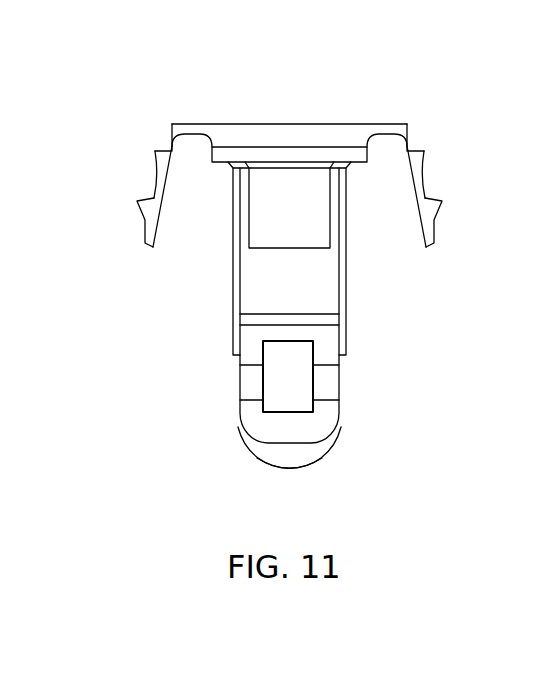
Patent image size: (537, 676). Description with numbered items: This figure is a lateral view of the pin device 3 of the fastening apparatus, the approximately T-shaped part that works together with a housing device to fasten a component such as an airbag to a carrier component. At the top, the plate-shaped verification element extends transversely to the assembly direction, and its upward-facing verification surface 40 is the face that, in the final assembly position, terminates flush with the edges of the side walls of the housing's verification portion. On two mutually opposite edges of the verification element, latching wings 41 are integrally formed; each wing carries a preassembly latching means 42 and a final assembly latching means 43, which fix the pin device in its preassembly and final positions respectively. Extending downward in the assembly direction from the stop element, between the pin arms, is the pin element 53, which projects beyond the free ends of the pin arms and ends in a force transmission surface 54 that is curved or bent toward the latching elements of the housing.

The pin device 3 is at (322, 95).
The verification surface 40 is at (246, 118).
The latching wings 41 is at (158, 188).
The preassembly latching means 42 is at (155, 151).
The final assembly latching means 43 is at (136, 204).
The pin element 53 is at (323, 455).
The force transmission surface 54 is at (258, 469).